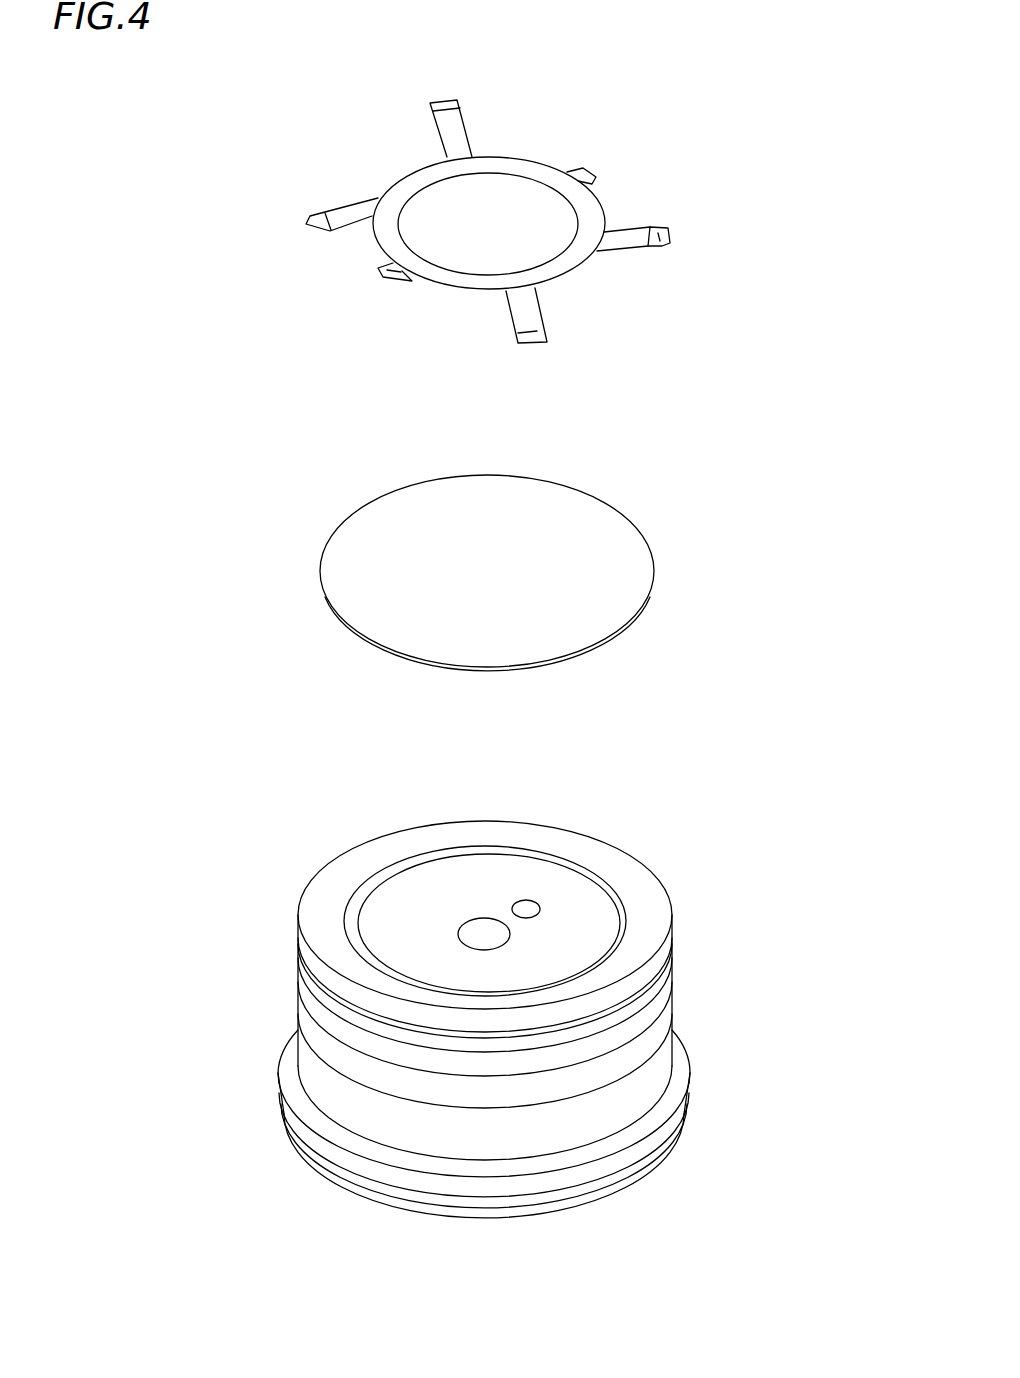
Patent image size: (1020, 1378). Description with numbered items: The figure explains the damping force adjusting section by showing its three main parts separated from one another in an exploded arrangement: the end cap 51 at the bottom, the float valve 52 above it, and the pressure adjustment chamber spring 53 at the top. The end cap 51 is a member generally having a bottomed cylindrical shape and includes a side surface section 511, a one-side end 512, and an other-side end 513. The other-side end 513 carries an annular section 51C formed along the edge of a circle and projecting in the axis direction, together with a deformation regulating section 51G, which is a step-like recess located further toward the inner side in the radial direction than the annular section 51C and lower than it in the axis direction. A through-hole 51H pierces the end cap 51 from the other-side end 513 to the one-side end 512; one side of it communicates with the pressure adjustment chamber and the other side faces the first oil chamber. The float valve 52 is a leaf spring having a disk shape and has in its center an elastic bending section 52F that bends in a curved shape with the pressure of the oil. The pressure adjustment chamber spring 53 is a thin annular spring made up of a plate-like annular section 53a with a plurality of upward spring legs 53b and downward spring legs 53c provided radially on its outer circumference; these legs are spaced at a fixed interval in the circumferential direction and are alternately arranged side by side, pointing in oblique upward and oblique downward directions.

The end cap 51 is at (546, 1022).
The side surface section 511 is at (680, 1007).
The one-side end 512 is at (590, 1202).
The other-side end 513 is at (607, 921).
The deformation regulating section 51G is at (580, 914).
The annular section 51C is at (638, 945).
The through-hole 51H is at (530, 902).
The float valve 52 is at (440, 527).
The elastic bending section 52F is at (480, 552).
The pressure adjustment chamber spring 53 is at (477, 222).
The plate-like annular section 53a is at (531, 170).
The upward spring legs 53b is at (443, 105).
The downward spring legs 53c is at (592, 176).